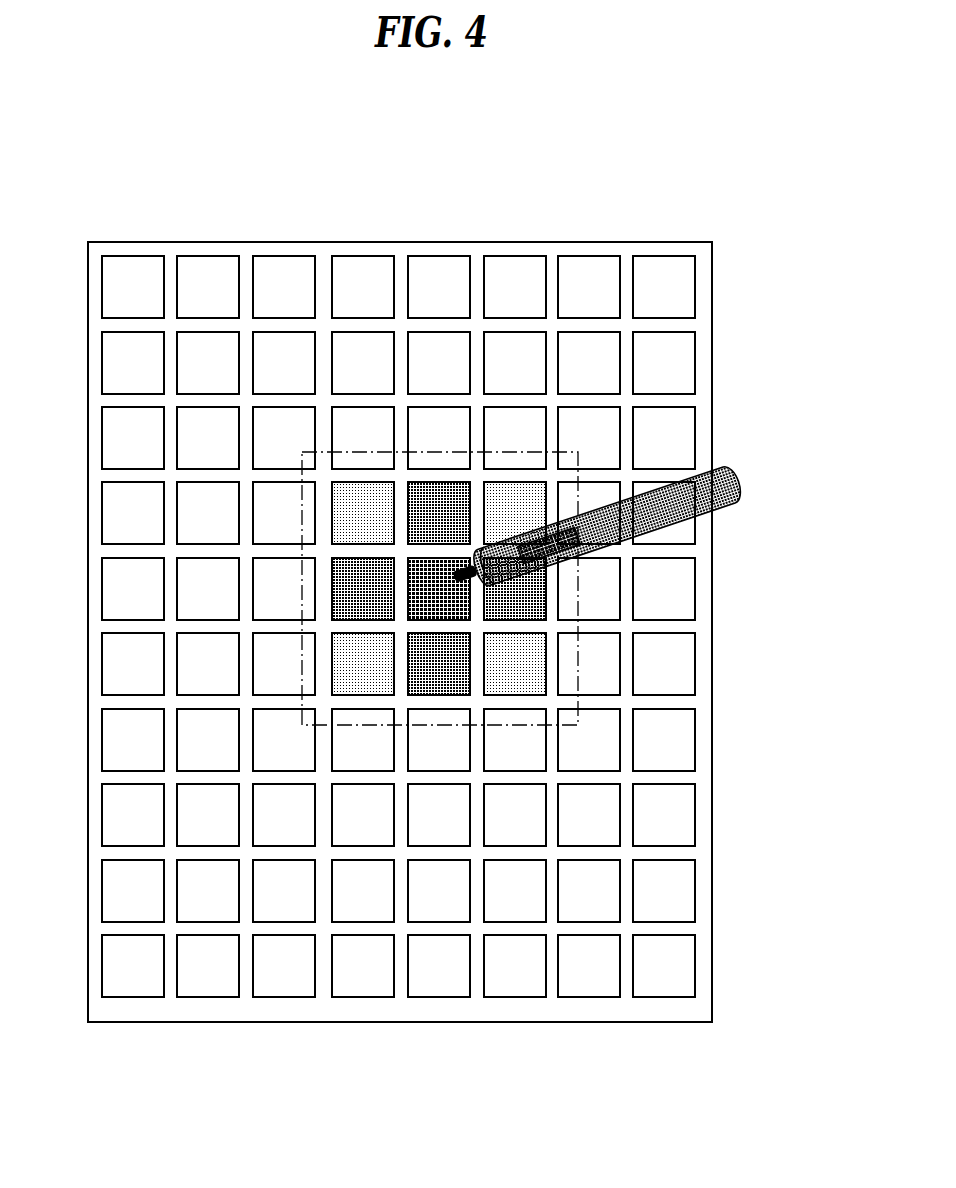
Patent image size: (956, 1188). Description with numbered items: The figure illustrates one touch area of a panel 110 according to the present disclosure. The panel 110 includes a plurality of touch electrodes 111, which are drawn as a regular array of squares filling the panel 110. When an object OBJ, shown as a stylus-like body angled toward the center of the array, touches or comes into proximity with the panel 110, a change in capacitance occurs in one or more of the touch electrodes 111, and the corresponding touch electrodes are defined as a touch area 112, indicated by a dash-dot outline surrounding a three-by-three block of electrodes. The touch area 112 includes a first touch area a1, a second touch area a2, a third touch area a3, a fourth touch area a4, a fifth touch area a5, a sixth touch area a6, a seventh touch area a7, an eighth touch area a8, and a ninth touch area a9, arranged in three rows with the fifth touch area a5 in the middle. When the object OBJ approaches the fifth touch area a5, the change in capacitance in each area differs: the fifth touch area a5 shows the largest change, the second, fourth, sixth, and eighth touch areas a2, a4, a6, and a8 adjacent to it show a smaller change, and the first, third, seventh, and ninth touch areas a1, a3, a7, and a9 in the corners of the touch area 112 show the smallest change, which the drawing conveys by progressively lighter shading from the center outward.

The panel 110 is at (110, 132).
The touch electrodes 111 is at (205, 256).
The touch area 112 is at (584, 442).
The object OBJ is at (733, 481).
The first touch area a1 is at (363, 513).
The second touch area a2 is at (439, 513).
The third touch area a3 is at (515, 513).
The fourth touch area a4 is at (363, 589).
The fifth touch area a5 is at (439, 589).
The sixth touch area a6 is at (515, 589).
The seventh touch area a7 is at (363, 664).
The eighth touch area a8 is at (439, 664).
The ninth touch area a9 is at (515, 664).